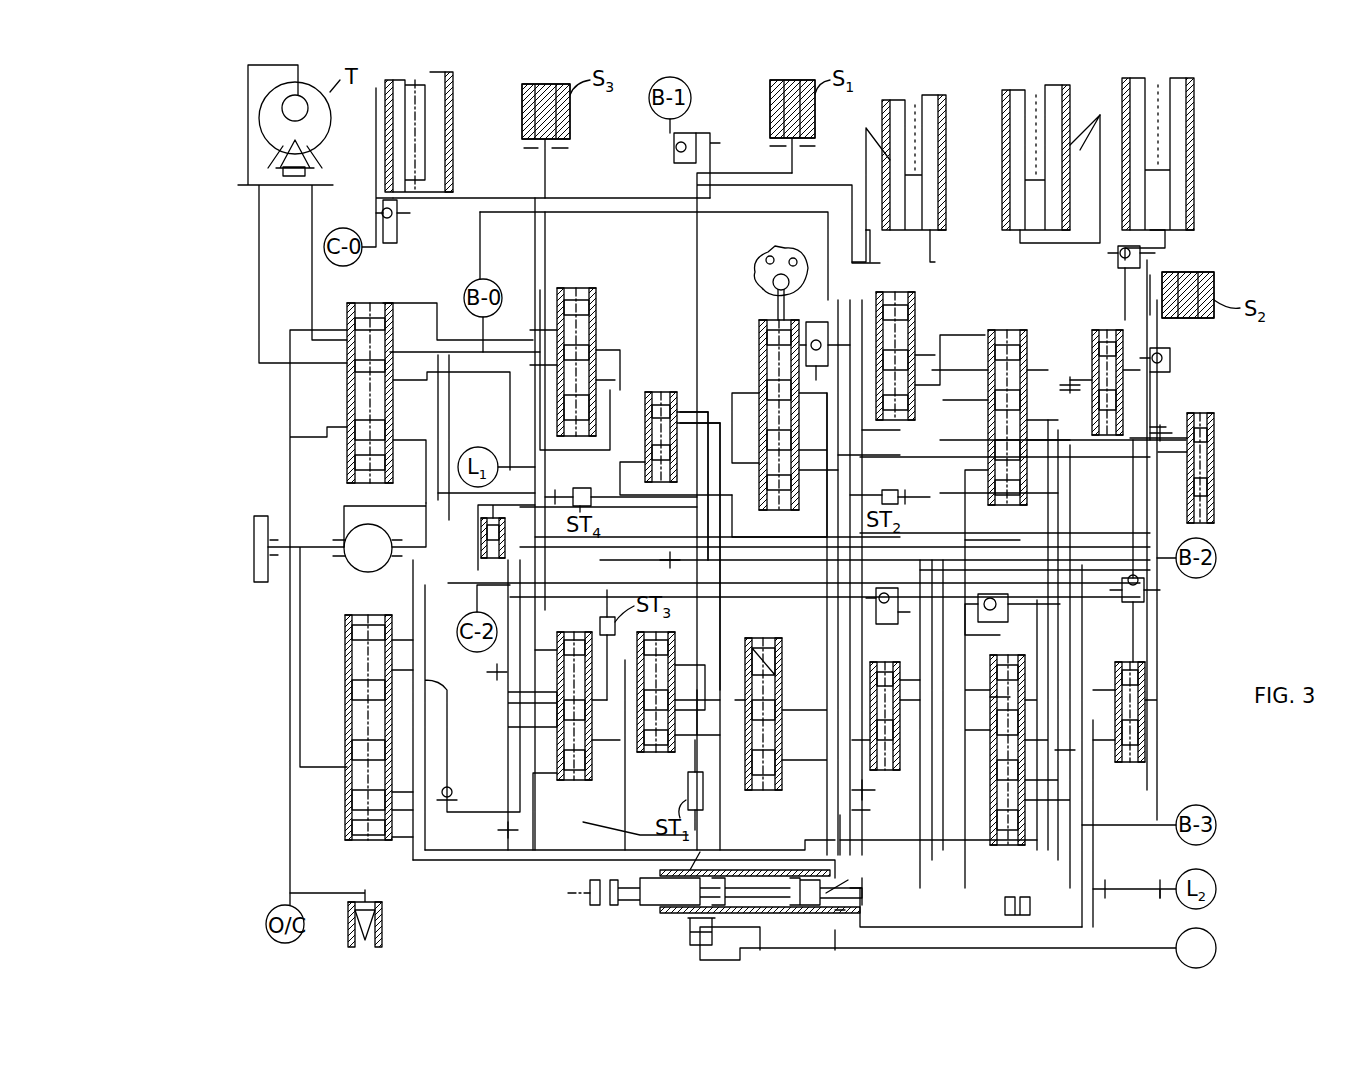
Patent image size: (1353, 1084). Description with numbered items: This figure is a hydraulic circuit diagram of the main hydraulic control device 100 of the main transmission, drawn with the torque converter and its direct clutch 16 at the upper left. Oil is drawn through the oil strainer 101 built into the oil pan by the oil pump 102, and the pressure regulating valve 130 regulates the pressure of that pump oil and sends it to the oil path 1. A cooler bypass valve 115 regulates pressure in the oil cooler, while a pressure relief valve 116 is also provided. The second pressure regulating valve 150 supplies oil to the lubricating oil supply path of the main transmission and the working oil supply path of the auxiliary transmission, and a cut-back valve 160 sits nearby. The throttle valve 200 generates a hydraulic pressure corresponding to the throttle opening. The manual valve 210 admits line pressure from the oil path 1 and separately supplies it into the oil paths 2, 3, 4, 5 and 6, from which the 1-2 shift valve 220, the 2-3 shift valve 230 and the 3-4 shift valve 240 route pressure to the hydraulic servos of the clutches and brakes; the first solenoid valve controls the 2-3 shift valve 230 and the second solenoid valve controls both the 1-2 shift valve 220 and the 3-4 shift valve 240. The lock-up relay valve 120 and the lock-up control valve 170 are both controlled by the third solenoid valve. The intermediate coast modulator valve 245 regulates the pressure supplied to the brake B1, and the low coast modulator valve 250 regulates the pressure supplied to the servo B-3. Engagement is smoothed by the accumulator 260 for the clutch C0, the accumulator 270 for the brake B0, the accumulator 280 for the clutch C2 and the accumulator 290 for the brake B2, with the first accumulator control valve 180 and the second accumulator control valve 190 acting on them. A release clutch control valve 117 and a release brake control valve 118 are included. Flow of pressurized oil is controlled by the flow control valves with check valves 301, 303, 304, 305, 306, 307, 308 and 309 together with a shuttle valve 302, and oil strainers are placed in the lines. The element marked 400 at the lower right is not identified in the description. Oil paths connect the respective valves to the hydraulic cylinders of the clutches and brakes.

The direct clutch 16 is at (250, 88).
The main hydraulic control device 100 is at (245, 213).
The oil strainer 101 is at (252, 547).
The oil pump 102 is at (379, 537).
The cooler bypass valve 115 is at (375, 903).
The pressure relief valve 116 is at (482, 545).
The release clutch control valve 117 is at (1150, 745).
The release brake control valve 118 is at (897, 755).
The lock-up relay valve 120 is at (378, 305).
The pressure regulating valve 130 is at (345, 830).
The second pressure regulating valve 150 is at (598, 285).
The cut-back valve 160 is at (642, 392).
The lock-up control valve 170 is at (560, 640).
The first accumulator control valve 180 is at (652, 760).
The second accumulator control valve 190 is at (780, 770).
The throttle valve 200 is at (753, 340).
The manual valve 210 is at (565, 897).
The 1-2 shift valve 220 is at (1025, 838).
The 2-3 shift valve 230 is at (985, 330).
The 3-4 shift valve 240 is at (912, 300).
The intermediate coast modulator valve 245 is at (1092, 340).
The low coast modulator valve 250 is at (1215, 443).
The accumulator 260 is at (440, 110).
The accumulator 270 is at (945, 120).
The accumulator 280 is at (1060, 120).
The accumulator 290 is at (1190, 122).
The flow control valve with check valve 301 is at (398, 214).
The shuttle valve 302 is at (1060, 612).
The flow control valve with check valve 303 is at (888, 616).
The flow control valve with check valve 304 is at (1160, 258).
The flow control valve with check valve 305 is at (821, 336).
The flow control valve with check valve 306 is at (935, 230).
The flow control valve with check valve 307 is at (710, 140).
The flow control valve with check valve 308 is at (1160, 600).
The flow control valve with check valve 309 is at (1170, 360).
The lubrication 400 is at (959, 947).
The oil path 1 is at (548, 866).
The oil path 2 is at (828, 850).
The oil path 3 is at (878, 927).
The oil path 4 is at (850, 875).
The oil path 5 is at (482, 860).
The oil path 6 is at (808, 952).